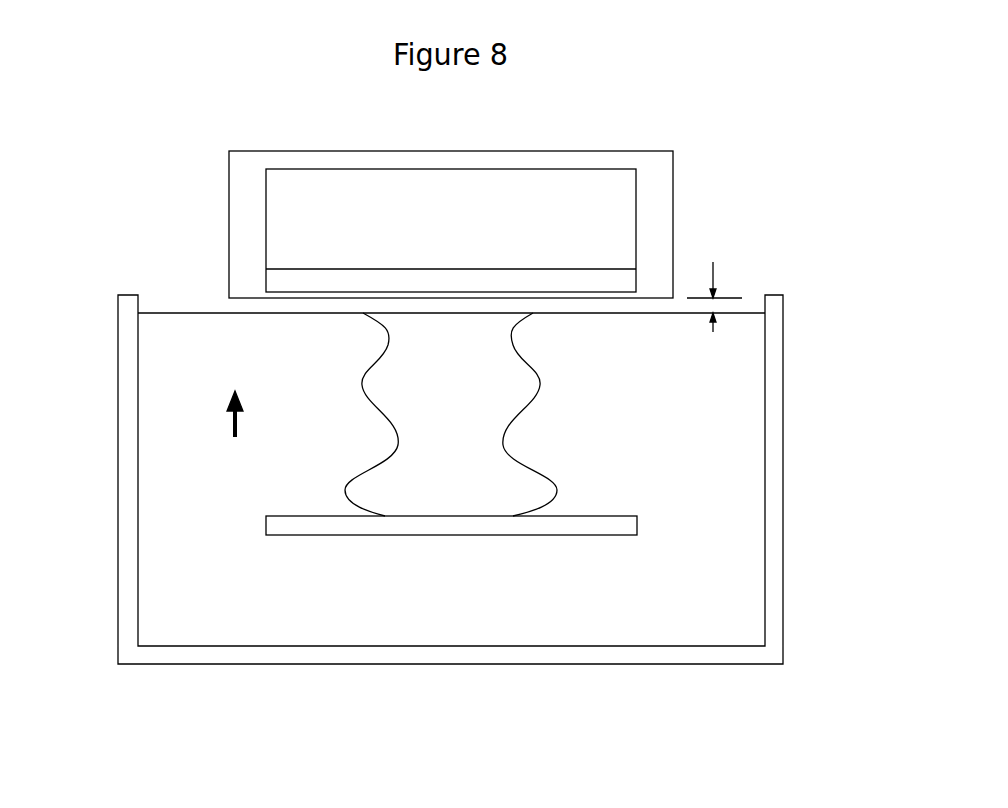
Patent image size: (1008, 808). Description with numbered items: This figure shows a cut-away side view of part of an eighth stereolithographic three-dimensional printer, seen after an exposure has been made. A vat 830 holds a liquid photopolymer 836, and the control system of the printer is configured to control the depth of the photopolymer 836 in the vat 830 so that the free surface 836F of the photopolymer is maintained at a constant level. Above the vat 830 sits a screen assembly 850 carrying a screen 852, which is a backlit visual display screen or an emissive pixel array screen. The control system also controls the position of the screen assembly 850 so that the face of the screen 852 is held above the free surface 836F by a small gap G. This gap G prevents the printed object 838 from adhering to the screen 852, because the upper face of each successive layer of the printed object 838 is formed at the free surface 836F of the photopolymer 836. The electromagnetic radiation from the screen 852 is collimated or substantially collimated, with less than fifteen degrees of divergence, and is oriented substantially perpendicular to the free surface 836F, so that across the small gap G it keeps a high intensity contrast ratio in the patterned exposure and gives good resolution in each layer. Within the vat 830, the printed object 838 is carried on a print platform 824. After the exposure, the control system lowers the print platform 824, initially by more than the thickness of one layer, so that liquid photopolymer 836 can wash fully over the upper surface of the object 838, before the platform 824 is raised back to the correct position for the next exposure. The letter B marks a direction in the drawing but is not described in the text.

The vat 830 is at (465, 427).
The photopolymer 836 is at (410, 427).
The free surface of the photopolymer 836F is at (178, 313).
The screen assembly 850 is at (673, 151).
The screen 852 is at (411, 280).
The 3D printed object 838 is at (451, 414).
The print platform 824 is at (316, 535).
The gap G is at (713, 262).
The magnetic field direction B is at (249, 414).